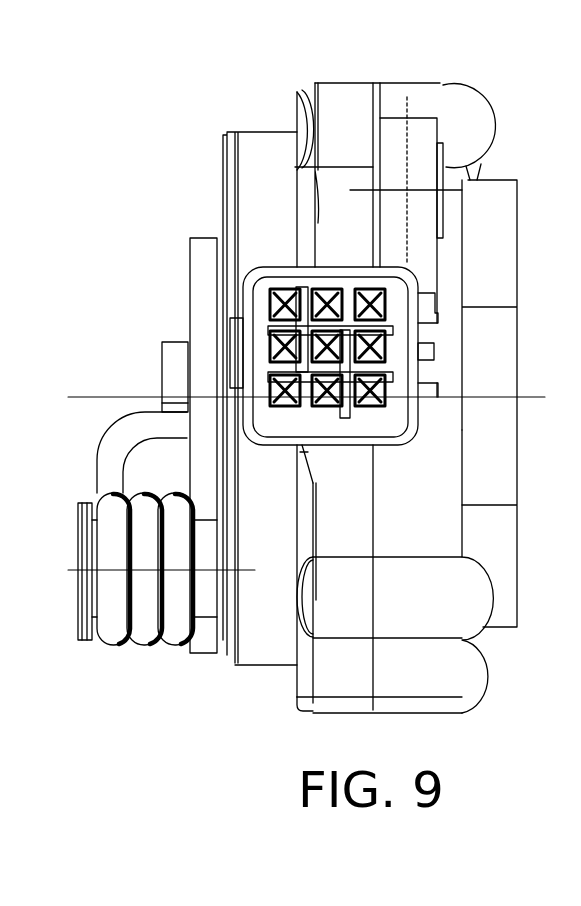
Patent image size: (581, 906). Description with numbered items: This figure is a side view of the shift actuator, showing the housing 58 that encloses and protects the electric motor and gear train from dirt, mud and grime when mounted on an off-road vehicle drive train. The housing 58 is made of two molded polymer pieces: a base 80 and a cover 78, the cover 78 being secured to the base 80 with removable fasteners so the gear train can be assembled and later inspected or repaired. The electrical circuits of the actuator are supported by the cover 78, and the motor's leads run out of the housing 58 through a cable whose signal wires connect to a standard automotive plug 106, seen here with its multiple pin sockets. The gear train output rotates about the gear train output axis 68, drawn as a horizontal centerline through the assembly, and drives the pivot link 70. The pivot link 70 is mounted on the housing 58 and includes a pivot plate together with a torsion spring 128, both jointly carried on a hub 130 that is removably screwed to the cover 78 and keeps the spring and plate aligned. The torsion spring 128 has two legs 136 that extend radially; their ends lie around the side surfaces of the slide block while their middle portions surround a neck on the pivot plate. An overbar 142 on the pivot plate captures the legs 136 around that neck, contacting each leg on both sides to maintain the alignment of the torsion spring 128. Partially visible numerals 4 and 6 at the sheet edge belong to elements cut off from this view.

The housing 58 is at (266, 227).
The cover 78 is at (267, 148).
The base 80 is at (445, 100).
The standard automotive plug 106 is at (265, 272).
The legs 136 is at (205, 300).
The overbar 142 is at (170, 358).
The gear train output axis 68 is at (117, 397).
The pivot link 70 is at (66, 426).
The torsion spring 128 is at (193, 637).
The hub 130 is at (86, 652).
The partial numeral 4 is at (17, 187).
The partial numeral 6 is at (6, 483).